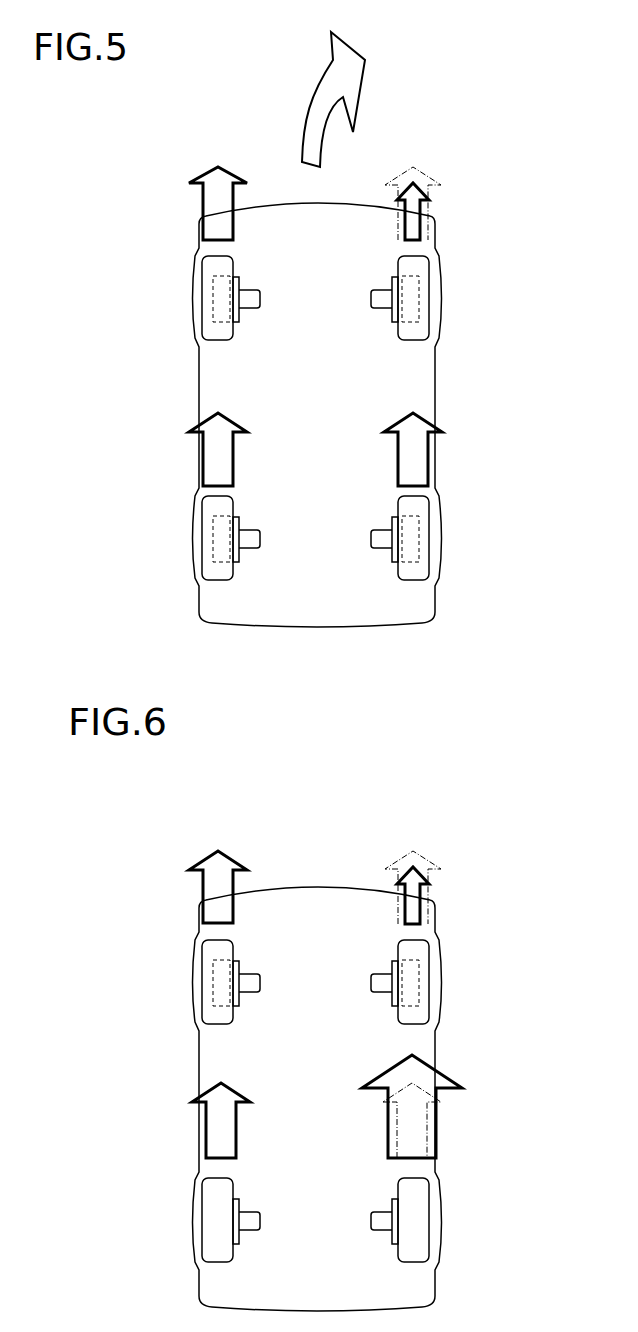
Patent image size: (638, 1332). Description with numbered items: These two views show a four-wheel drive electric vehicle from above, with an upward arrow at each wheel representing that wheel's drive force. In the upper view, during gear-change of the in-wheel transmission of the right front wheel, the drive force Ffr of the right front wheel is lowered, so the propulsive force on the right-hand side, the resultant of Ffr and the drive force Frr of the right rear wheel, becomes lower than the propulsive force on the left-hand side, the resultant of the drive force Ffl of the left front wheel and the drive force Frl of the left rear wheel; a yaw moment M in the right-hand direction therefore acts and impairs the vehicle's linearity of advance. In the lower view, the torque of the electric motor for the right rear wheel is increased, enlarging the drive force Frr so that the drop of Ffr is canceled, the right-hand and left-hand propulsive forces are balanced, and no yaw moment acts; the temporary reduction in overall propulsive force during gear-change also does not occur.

In FIG. 5, the drive force of the left front wheel Ffl is at (212, 203).
In FIG. 6, the drive force of the left front wheel Ffl is at (212, 886).
In FIG. 5, the drive force of the right front wheel Ffr is at (420, 205).
In FIG. 6, the drive force of the right front wheel Ffr is at (420, 889).
In FIG. 5, the drive force of the left rear wheel Frl is at (212, 458).
In FIG. 6, the drive force of the left rear wheel Frl is at (212, 1124).
In FIG. 5, the drive force of the right rear wheel Frr is at (418, 457).
In FIG. 6, the drive force of the right rear wheel Frr is at (432, 1122).
In FIG. 5, the yaw moment M is at (325, 107).